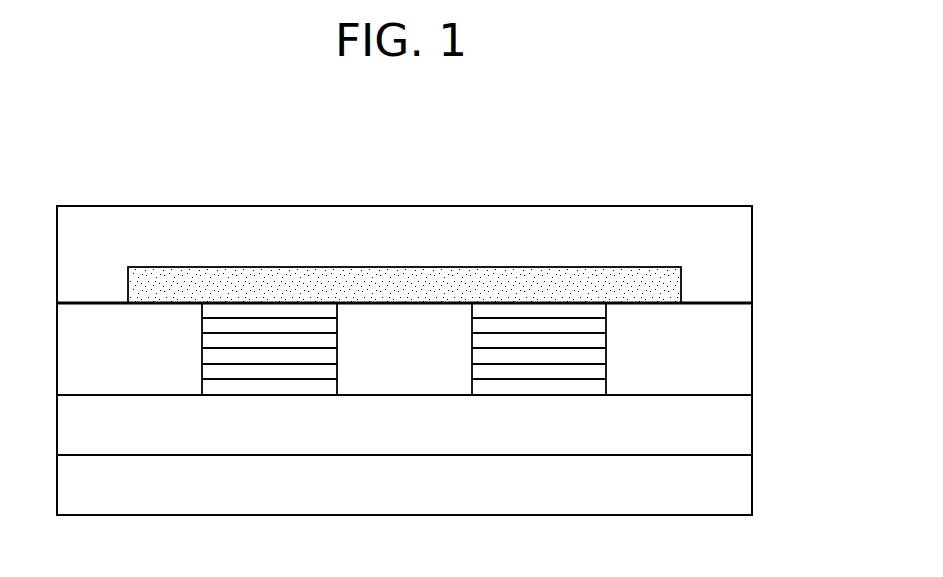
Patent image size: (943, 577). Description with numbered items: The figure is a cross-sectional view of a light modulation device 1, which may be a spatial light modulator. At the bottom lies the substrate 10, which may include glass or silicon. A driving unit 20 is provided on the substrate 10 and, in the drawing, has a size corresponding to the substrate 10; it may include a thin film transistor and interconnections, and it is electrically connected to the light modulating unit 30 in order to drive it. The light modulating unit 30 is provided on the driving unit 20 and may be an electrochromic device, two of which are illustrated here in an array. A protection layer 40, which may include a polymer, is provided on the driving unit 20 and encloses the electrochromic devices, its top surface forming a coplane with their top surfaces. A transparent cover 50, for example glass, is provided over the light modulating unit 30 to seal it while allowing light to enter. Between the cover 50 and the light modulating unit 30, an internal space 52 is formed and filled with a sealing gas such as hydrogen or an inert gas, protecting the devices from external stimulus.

The light modulation device 1 is at (717, 148).
The substrate 10 is at (733, 491).
The driving unit 20 is at (733, 426).
The light modulating unit 30 is at (598, 325).
The protection layer 40 is at (733, 369).
The cover 50 is at (733, 259).
The internal space 52 is at (665, 295).